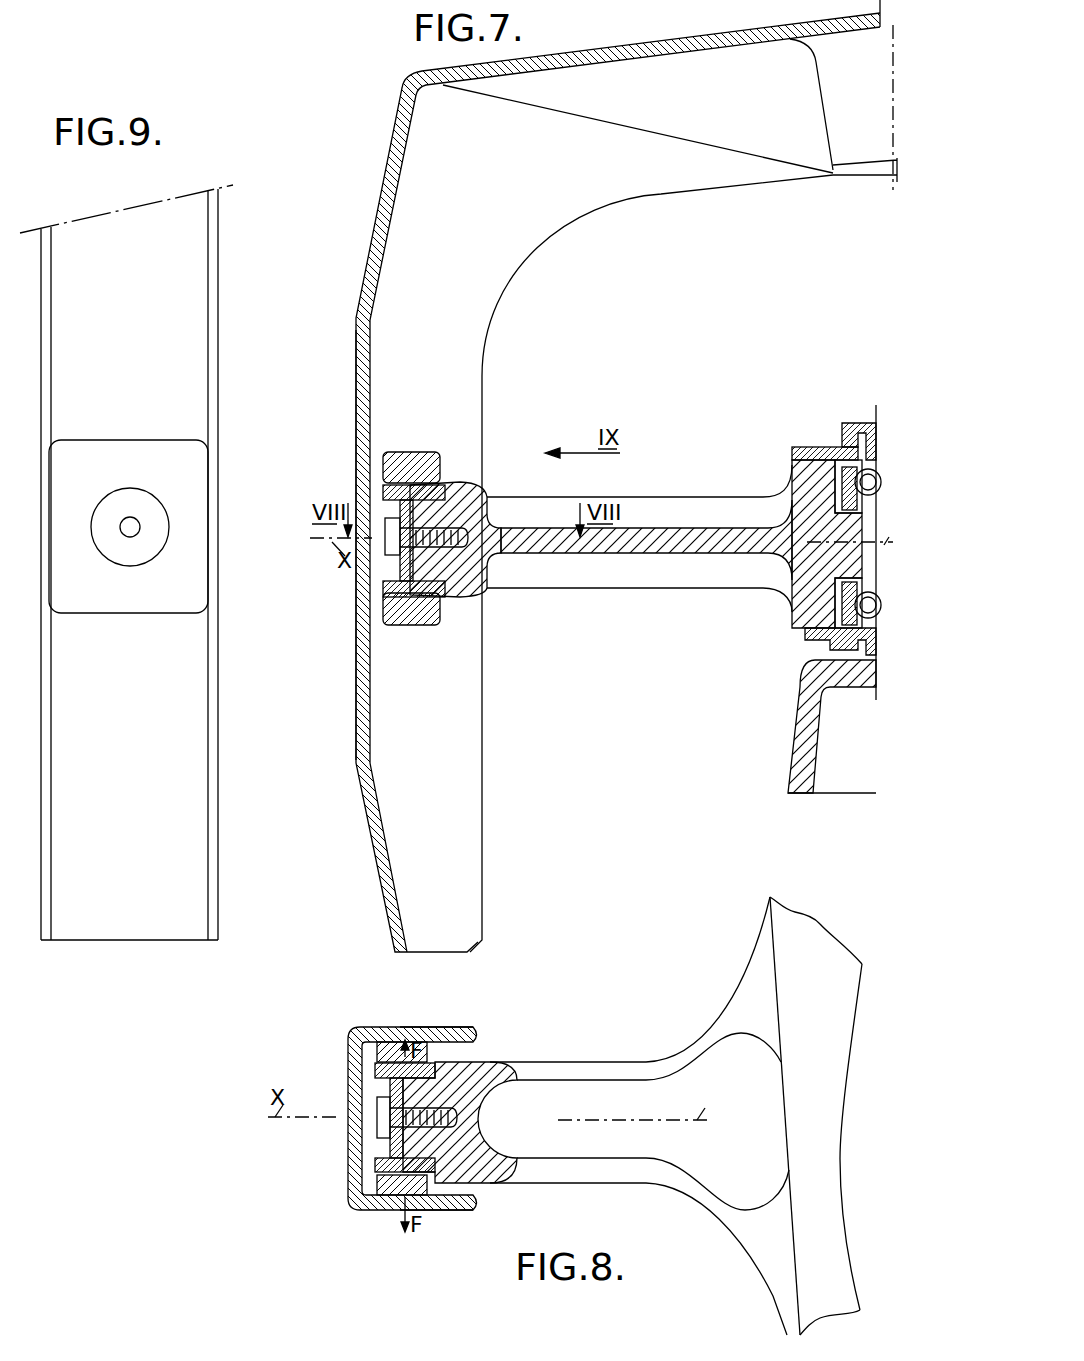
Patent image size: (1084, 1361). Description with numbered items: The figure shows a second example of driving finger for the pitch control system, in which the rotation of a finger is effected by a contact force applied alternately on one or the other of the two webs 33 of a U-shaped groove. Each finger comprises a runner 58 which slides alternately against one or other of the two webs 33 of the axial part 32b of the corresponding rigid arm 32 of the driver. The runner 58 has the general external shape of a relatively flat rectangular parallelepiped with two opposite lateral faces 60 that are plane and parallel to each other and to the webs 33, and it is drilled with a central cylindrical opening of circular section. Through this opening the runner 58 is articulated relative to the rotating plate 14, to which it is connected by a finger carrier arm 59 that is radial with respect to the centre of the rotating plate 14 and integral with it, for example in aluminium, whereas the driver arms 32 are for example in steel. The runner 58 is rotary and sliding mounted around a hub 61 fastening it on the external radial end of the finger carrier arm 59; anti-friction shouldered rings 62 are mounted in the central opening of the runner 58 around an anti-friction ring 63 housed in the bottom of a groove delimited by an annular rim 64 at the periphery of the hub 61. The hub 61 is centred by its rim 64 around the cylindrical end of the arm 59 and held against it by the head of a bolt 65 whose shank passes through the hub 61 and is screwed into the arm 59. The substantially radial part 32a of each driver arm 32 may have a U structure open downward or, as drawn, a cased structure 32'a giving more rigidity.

In FIG. 7, the rotating plate 14 is at (812, 600).
In FIG. 8, the rotating plate 14 is at (798, 957).
In FIG. 7, the rigid arm 32 is at (611, 476).
In FIG. 7, the substantially radial part 32a is at (659, 49).
In FIG. 7, the cased structure 32'a is at (843, 131).
In FIG. 7, the axial part 32b is at (364, 376).
In FIG. 9, the axial part 32b is at (217, 265).
In FIG. 8, the axial part 32b is at (358, 1100).
In FIG. 7, the webs 33 is at (457, 793).
In FIG. 9, the webs 33 is at (47, 310).
In FIG. 8, the webs 33 is at (472, 1033).
In FIG. 7, the runner 58 is at (437, 458).
In FIG. 9, the runner 58 is at (162, 460).
In FIG. 8, the runner 58 is at (402, 1118).
In FIG. 7, the finger carrier arm 59 is at (633, 550).
In FIG. 8, the finger carrier arm 59 is at (604, 1070).
In FIG. 9, the lateral faces 60 is at (48, 509).
In FIG. 7, the hub 61 is at (477, 493).
In FIG. 8, the hub 61 is at (377, 1075).
In FIG. 7, the anti-friction shouldered rings 62 is at (388, 488).
In FIG. 8, the anti-friction shouldered rings 62 is at (392, 1065).
In FIG. 7, the anti-friction ring 63 is at (438, 597).
In FIG. 8, the anti-friction ring 63 is at (435, 1163).
In FIG. 7, the annular rim 64 is at (388, 588).
In FIG. 8, the annular rim 64 is at (378, 1163).
In FIG. 7, the bolt 65 is at (450, 547).
In FIG. 8, the bolt 65 is at (458, 1115).